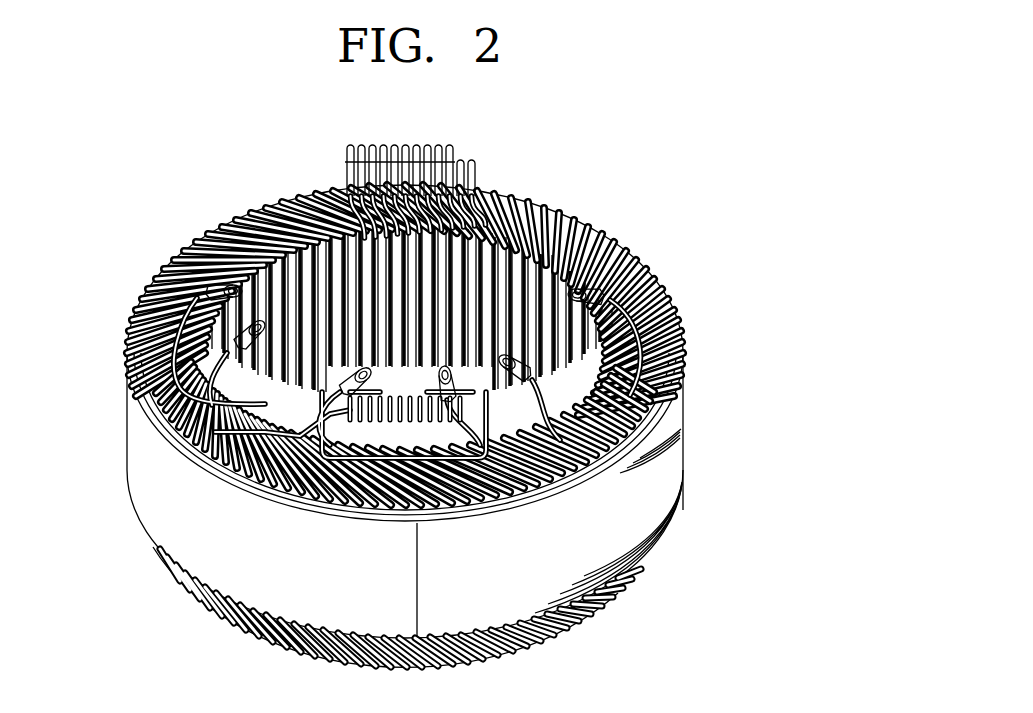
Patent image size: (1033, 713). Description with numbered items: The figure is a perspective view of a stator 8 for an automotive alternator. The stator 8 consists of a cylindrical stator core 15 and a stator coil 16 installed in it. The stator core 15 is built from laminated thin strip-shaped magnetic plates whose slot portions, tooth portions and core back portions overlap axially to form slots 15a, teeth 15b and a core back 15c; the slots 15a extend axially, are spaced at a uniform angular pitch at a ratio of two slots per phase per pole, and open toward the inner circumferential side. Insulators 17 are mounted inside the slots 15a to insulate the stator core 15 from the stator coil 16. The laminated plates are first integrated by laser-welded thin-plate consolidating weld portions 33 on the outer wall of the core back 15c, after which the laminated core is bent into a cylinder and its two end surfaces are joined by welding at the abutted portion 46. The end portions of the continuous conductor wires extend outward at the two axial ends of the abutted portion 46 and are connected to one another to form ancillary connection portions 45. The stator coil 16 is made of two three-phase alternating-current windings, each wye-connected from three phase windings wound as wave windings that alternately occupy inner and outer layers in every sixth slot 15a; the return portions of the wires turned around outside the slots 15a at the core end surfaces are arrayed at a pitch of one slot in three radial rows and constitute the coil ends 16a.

The stator 8 is at (123, 138).
The stator core 15 is at (686, 408).
The slots 15a is at (610, 497).
The teeth 15b is at (540, 490).
The core back 15c is at (567, 487).
The stator coil 16 is at (635, 248).
The coil ends 16a is at (183, 248).
The insulators 17 is at (590, 480).
The thin-plate consolidating weld portions 33 is at (129, 353).
The ancillary connection portions 45 is at (460, 146).
The abutted portion 46 is at (407, 267).